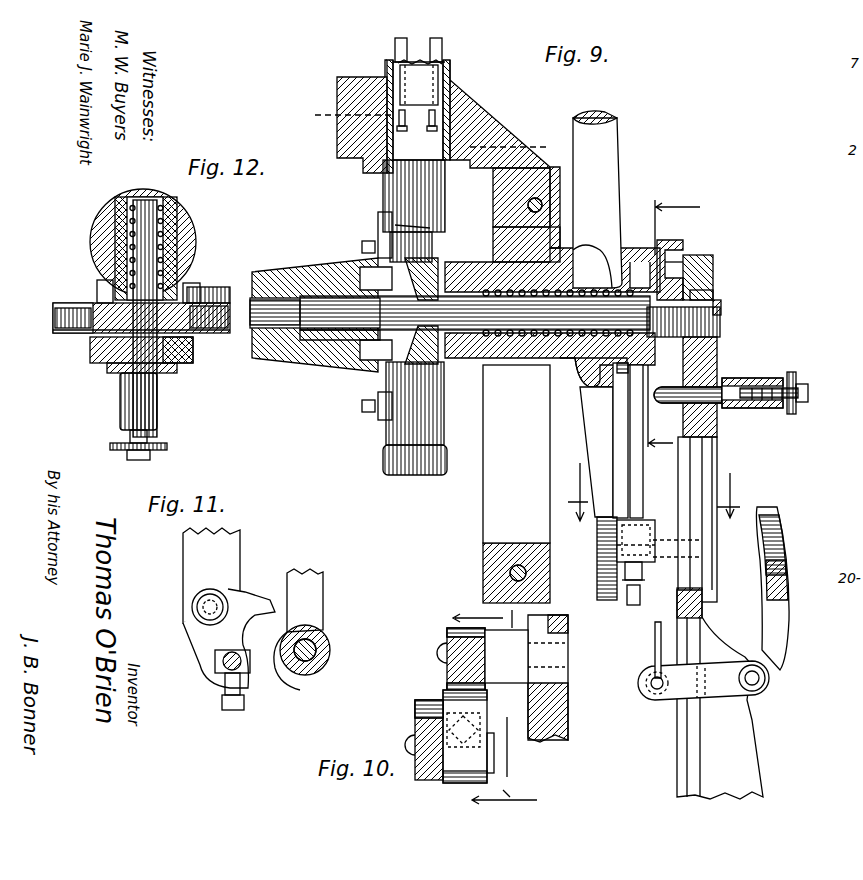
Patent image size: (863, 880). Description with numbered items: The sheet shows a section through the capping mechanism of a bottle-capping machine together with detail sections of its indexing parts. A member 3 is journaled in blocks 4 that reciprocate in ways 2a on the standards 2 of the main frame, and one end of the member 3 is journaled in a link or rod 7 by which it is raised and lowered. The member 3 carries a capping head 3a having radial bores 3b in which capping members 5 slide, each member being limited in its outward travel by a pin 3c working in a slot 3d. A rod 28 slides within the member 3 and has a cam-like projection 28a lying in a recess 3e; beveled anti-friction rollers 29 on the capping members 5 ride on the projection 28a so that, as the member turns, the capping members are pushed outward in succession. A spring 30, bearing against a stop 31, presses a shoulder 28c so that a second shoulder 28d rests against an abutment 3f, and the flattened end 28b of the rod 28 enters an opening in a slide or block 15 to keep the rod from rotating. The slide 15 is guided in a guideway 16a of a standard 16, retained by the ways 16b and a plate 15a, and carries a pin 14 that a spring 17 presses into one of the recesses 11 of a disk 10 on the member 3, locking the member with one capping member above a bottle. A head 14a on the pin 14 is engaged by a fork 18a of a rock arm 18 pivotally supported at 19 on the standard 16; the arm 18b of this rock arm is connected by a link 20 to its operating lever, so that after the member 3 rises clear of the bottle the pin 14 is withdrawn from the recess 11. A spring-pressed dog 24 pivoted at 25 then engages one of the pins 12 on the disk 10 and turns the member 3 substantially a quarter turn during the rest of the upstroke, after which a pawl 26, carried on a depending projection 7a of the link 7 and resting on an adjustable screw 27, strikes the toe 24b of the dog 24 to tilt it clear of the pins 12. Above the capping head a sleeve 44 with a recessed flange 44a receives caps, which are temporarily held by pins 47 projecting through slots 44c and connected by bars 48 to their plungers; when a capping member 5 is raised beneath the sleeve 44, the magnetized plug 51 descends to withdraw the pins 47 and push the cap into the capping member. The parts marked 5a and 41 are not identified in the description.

In FIG. 9, the standards or uprights 2 is at (483, 581).
In FIG. 9, the ways or guides 2a is at (483, 538).
In FIG. 9, the member 3 is at (265, 272).
In FIG. 12, the member 3 is at (178, 208).
In FIG. 9, the capping head 3a is at (385, 224).
In FIG. 9, the bores 3b is at (460, 448).
In FIG. 9, the pin 3c is at (362, 246).
In FIG. 9, the slot 3d is at (376, 411).
In FIG. 9, the recess 3e is at (340, 270).
In FIG. 9, the abutment 3f is at (252, 290).
In FIG. 9, the blocks 4 is at (556, 390).
In FIG. 9, the capping members 5 is at (445, 240).
In FIG. 9, the shaft portion 5a is at (380, 231).
In FIG. 9, the link or rod 7 is at (612, 140).
In FIG. 12, the link or rod 7 is at (98, 222).
In FIG. 9, the depending projection 7a is at (598, 440).
In FIG. 11, the depending projection 7a is at (240, 548).
In FIG. 10, the depending projection 7a is at (415, 737).
In FIG. 9, the disk or plate 10 is at (672, 242).
In FIG. 12, the disk or plate 10 is at (55, 313).
In FIG. 9, the recesses 11 is at (690, 262).
In FIG. 12, the recesses 11 is at (80, 330).
In FIG. 10, the recesses 11 is at (495, 703).
In FIG. 9, the pins or projections 12 is at (640, 262).
In FIG. 12, the pins or projections 12 is at (100, 283).
In FIG. 9, the pin 14 is at (735, 385).
In FIG. 12, the pin 14 is at (150, 437).
In FIG. 9, the enlargement or head 14a is at (800, 388).
In FIG. 12, the enlargement or head 14a is at (160, 450).
In FIG. 9, the slide or block 15 is at (722, 362).
In FIG. 12, the slide or block 15 is at (192, 360).
In FIG. 9, the plate 15a is at (722, 308).
In FIG. 12, the plate 15a is at (170, 373).
In FIG. 9, the standard 16 is at (702, 270).
In FIG. 12, the standard 16 is at (92, 350).
In FIG. 10, the standard 16 is at (568, 702).
In FIG. 9, the guideway 16a is at (703, 540).
In FIG. 9, the ways 16b is at (715, 420).
In FIG. 12, the ways 16b is at (110, 360).
In FIG. 9, the spring 17 is at (765, 405).
In FIG. 9, the rock arm 18 is at (775, 652).
In FIG. 9, the fork 18a is at (783, 532).
In FIG. 9, the arm or lever 18b is at (720, 698).
In FIG. 9, the pivot 19 is at (758, 692).
In FIG. 9, the rod or link 20 is at (653, 660).
In FIG. 9, the spring pressed dog or pawl 24 is at (641, 495).
In FIG. 12, the spring pressed dog or pawl 24 is at (224, 288).
In FIG. 11, the spring pressed dog or pawl 24 is at (315, 615).
In FIG. 10, the spring pressed dog or pawl 24 is at (447, 640).
In FIG. 11, the toe 24b is at (294, 670).
In FIG. 11, the pivot 25 is at (322, 650).
In FIG. 10, the pivot 25 is at (443, 656).
In FIG. 9, the pawl 26 is at (622, 548).
In FIG. 11, the pawl 26 is at (243, 597).
In FIG. 10, the pawl 26 is at (488, 712).
In FIG. 9, the adjustable stop or screw 27 is at (628, 590).
In FIG. 11, the adjustable stop or screw 27 is at (225, 690).
In FIG. 9, the rod 28 is at (300, 360).
In FIG. 12, the rod 28 is at (150, 200).
In FIG. 9, the cam-like projection 28a is at (333, 357).
In FIG. 9, the flattened end 28b is at (720, 318).
In FIG. 12, the flattened end 28b is at (137, 380).
In FIG. 9, the shoulder 28c is at (548, 395).
In FIG. 9, the second shoulder 28d is at (270, 348).
In FIG. 9, the beveled anti-friction rollers 29 is at (430, 327).
In FIG. 9, the spring 30 is at (530, 262).
In FIG. 12, the spring 30 is at (102, 246).
In FIG. 9, the stop 31 is at (722, 298).
In FIG. 12, the stop 31 is at (70, 305).
In FIG. 9, the upper housing 41 is at (352, 77).
In FIG. 9, the tube or sleeve 44 is at (455, 100).
In FIG. 9, the recessed flange 44a is at (504, 197).
In FIG. 9, the slots 44c is at (421, 129).
In FIG. 9, the pins 47 is at (432, 132).
In FIG. 9, the bars or rods 48 is at (406, 40).
In FIG. 9, the plug or plunger 51 is at (420, 82).